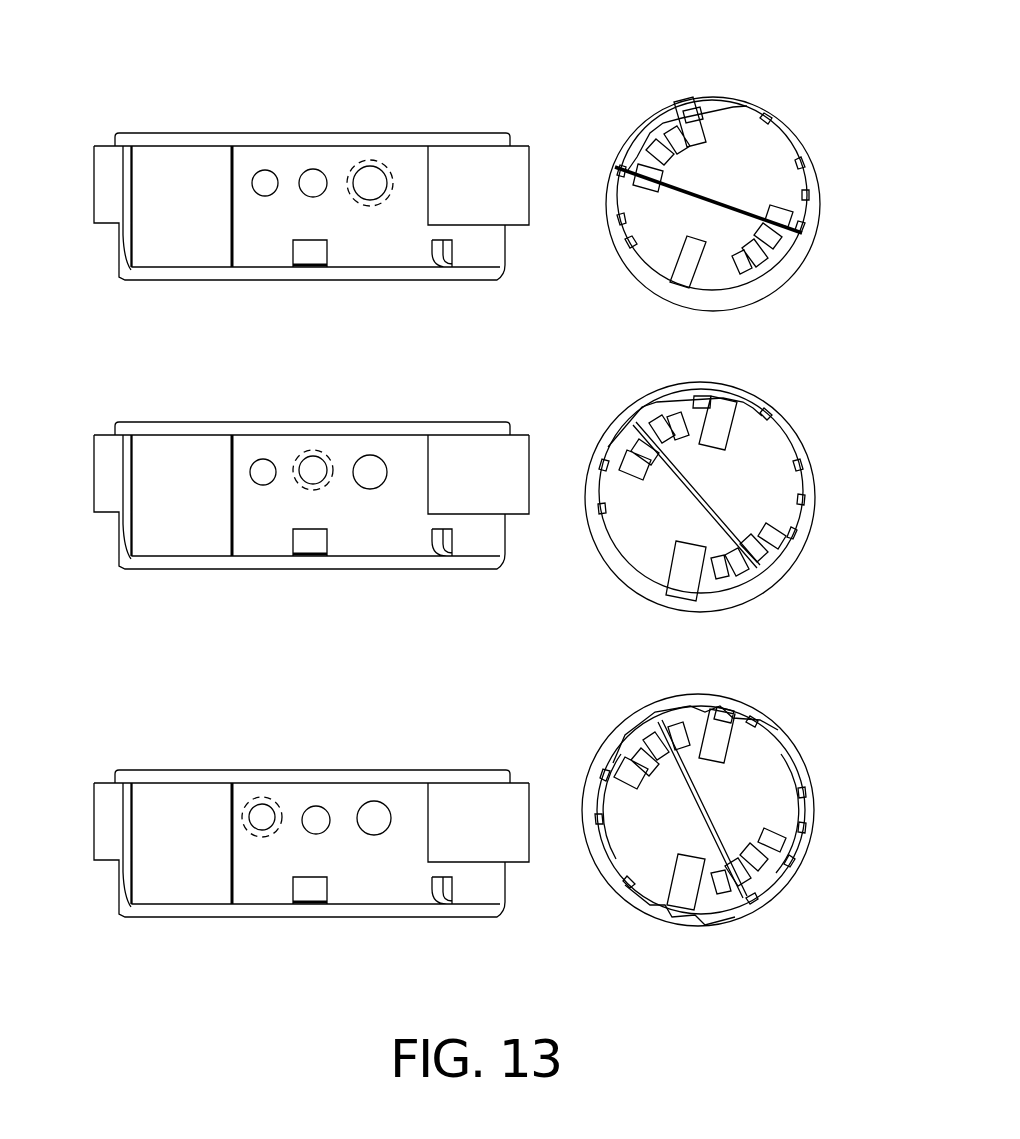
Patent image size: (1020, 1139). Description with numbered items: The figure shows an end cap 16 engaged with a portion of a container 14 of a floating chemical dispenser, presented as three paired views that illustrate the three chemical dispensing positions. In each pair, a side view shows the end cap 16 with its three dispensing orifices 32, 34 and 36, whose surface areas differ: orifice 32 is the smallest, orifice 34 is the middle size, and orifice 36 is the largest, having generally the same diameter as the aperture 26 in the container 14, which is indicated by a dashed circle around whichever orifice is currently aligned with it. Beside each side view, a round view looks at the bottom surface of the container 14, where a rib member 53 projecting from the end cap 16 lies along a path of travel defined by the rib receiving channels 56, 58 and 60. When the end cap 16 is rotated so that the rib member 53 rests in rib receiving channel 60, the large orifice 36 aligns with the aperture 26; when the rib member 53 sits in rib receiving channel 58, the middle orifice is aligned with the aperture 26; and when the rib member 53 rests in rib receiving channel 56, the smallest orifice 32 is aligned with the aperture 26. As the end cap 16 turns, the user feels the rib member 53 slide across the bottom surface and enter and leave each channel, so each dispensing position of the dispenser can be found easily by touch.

The container 14 is at (792, 225).
The end cap 16 is at (102, 198).
The aperture 26 is at (388, 168).
The orifice 32 is at (265, 170).
The orifice 34 is at (313, 169).
The orifice 36 is at (370, 166).
The rib member 53 is at (720, 201).
The rib receiving channel 56 is at (745, 900).
The rib receiving channel 58 is at (767, 567).
The rib receiving channel 60 is at (812, 207).